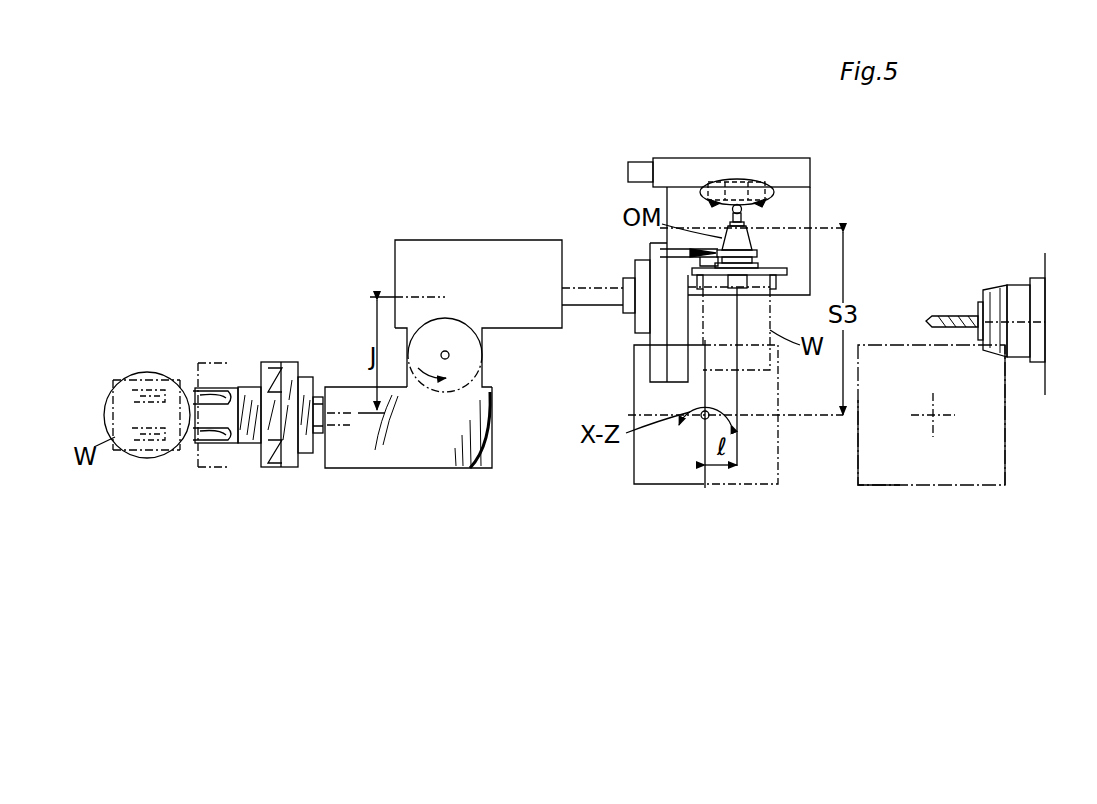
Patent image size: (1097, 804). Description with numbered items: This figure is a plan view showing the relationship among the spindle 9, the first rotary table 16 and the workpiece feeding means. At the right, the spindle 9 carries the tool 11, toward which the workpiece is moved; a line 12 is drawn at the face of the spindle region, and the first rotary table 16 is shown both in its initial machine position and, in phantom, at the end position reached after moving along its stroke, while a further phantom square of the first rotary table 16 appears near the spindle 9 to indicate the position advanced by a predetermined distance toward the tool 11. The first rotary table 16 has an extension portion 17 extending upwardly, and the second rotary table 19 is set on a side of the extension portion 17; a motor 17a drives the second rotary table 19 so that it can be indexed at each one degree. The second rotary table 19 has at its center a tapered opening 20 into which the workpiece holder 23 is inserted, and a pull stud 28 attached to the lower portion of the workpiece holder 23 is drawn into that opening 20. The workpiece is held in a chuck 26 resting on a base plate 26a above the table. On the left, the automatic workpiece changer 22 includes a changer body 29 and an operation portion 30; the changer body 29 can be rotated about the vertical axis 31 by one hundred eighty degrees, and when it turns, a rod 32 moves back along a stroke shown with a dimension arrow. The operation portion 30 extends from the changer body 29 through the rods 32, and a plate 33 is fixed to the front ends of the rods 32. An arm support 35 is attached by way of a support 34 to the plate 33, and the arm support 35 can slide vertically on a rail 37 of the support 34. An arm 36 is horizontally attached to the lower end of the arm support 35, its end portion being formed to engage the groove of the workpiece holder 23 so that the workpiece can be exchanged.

The spindle 9 is at (1023, 315).
The tool 11 is at (950, 313).
The spindle face line 12 is at (1043, 398).
The first rotary table 16 is at (665, 205).
The extension portion 17 is at (682, 163).
The motor 17a is at (643, 163).
The second rotary table 19 is at (760, 195).
The tapered opening 20 is at (738, 190).
The automatic workpiece changer 22 is at (415, 232).
The workpiece holder 23 is at (750, 242).
The workpiece chuck 26 is at (147, 460).
The chuck base plate 26a is at (787, 285).
The pull stud 28 is at (742, 216).
The changer body 29 is at (418, 466).
The operation portion 30 is at (260, 302).
The vertical axis 31 is at (450, 356).
The rod 32 is at (597, 300).
The plate 33 is at (312, 378).
The support 34 is at (286, 466).
The arm support 35 is at (268, 363).
The arm 36 is at (228, 442).
The rail 37 is at (282, 370).